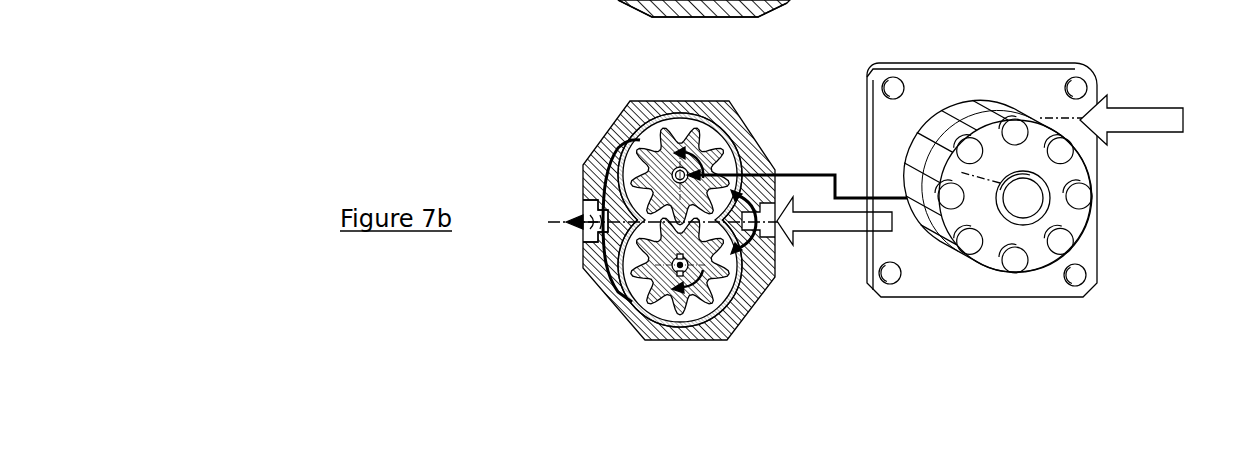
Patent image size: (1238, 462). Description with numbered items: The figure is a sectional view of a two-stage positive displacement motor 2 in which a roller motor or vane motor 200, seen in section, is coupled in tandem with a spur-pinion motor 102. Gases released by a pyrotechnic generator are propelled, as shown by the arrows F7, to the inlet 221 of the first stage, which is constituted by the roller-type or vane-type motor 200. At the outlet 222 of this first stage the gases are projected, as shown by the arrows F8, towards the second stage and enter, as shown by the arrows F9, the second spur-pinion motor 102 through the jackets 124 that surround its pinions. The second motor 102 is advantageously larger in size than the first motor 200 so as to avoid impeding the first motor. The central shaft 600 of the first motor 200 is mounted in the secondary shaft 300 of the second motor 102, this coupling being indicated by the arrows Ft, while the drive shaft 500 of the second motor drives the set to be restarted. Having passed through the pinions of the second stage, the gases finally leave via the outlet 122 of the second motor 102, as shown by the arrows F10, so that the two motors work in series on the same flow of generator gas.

The gear pump 2 is at (788, 142).
The spur-pinion motor 102 is at (752, 133).
The outlet 122 is at (583, 240).
The jackets 124 is at (690, 112).
The secondary shaft 300 is at (632, 150).
The drive shaft 500 is at (673, 268).
The roller motor or vane motor 200 is at (1103, 64).
The inlet 221 is at (1077, 110).
The outlet 222 is at (903, 232).
The central shaft 600 is at (1040, 198).
The arrows F7 is at (1135, 125).
The arrows F8 is at (835, 226).
The arrows F9 is at (770, 190).
The arrows F10 is at (583, 207).
The arrows Ft is at (815, 175).